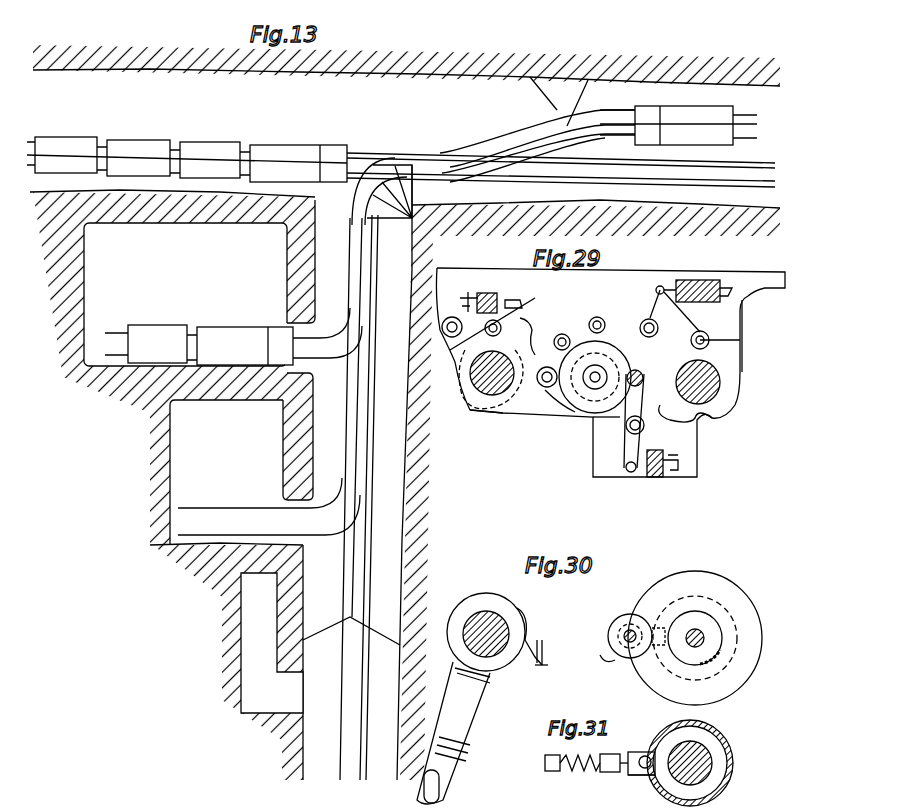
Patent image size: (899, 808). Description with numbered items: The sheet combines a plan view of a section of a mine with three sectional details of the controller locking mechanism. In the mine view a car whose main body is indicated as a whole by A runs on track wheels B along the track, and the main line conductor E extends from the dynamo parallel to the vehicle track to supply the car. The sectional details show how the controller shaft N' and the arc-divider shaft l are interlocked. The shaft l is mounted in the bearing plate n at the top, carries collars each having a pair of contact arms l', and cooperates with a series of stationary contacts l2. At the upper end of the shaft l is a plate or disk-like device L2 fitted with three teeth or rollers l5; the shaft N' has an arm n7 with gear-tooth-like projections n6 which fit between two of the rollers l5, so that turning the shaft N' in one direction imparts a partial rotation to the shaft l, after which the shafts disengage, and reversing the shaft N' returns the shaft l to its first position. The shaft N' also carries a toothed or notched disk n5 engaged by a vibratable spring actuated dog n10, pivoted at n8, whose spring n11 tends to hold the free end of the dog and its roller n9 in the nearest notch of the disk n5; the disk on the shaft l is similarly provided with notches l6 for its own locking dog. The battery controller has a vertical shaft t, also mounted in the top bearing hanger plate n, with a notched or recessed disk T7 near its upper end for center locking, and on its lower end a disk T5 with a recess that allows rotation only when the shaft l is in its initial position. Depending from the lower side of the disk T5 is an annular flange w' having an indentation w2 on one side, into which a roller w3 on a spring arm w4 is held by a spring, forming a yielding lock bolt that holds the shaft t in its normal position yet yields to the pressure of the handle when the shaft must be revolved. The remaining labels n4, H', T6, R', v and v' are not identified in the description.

In FIG. 13, the track wheels B is at (422, 8).
In FIG. 13, the main body part A is at (680, 100).
In FIG. 13, the main line conductor E is at (515, 143).
In FIG. 29, the bearing plate n is at (479, 268).
In FIG. 29, the spring actuated dog n10 is at (468, 299).
In FIG. 29, the spring n11 is at (488, 293).
In FIG. 29, the roller n9 is at (530, 300).
In FIG. 29, the projections n6 is at (535, 326).
In FIG. 29, the roller n4 is at (545, 348).
In FIG. 29, the pivot n8 is at (447, 340).
In FIG. 29, the arm n7 is at (485, 336).
In FIG. 29, the shaft H' is at (481, 383).
In FIG. 29, the notched disk n5 is at (497, 413).
In FIG. 29, the rollers l5 is at (562, 332).
In FIG. 29, the arc-divider shaft l is at (595, 359).
In FIG. 30, the arc-divider shaft l is at (626, 617).
In FIG. 29, the disk-like device L2 is at (560, 412).
In FIG. 29, the frame T6 is at (598, 416).
In FIG. 29, the contact arms l' is at (637, 413).
In FIG. 29, the notches l6 is at (650, 452).
In FIG. 29, the vertical shaft t is at (730, 368).
In FIG. 30, the vertical shaft t is at (700, 640).
In FIG. 31, the vertical shaft t is at (712, 766).
In FIG. 29, the notched disk T7 is at (742, 343).
In FIG. 30, the controller shaft N' is at (494, 624).
In FIG. 30, the lever arm R' is at (454, 733).
In FIG. 30, the link v is at (562, 627).
In FIG. 30, the link v' is at (597, 672).
In FIG. 30, the stationary contacts l2 is at (622, 612).
In FIG. 30, the disk T5 is at (720, 580).
In FIG. 30, the annular flange w' is at (713, 638).
In FIG. 31, the annular flange w' is at (703, 763).
In FIG. 31, the indentation w2 is at (640, 752).
In FIG. 31, the roller w3 is at (643, 776).
In FIG. 31, the spring arm w4 is at (586, 755).